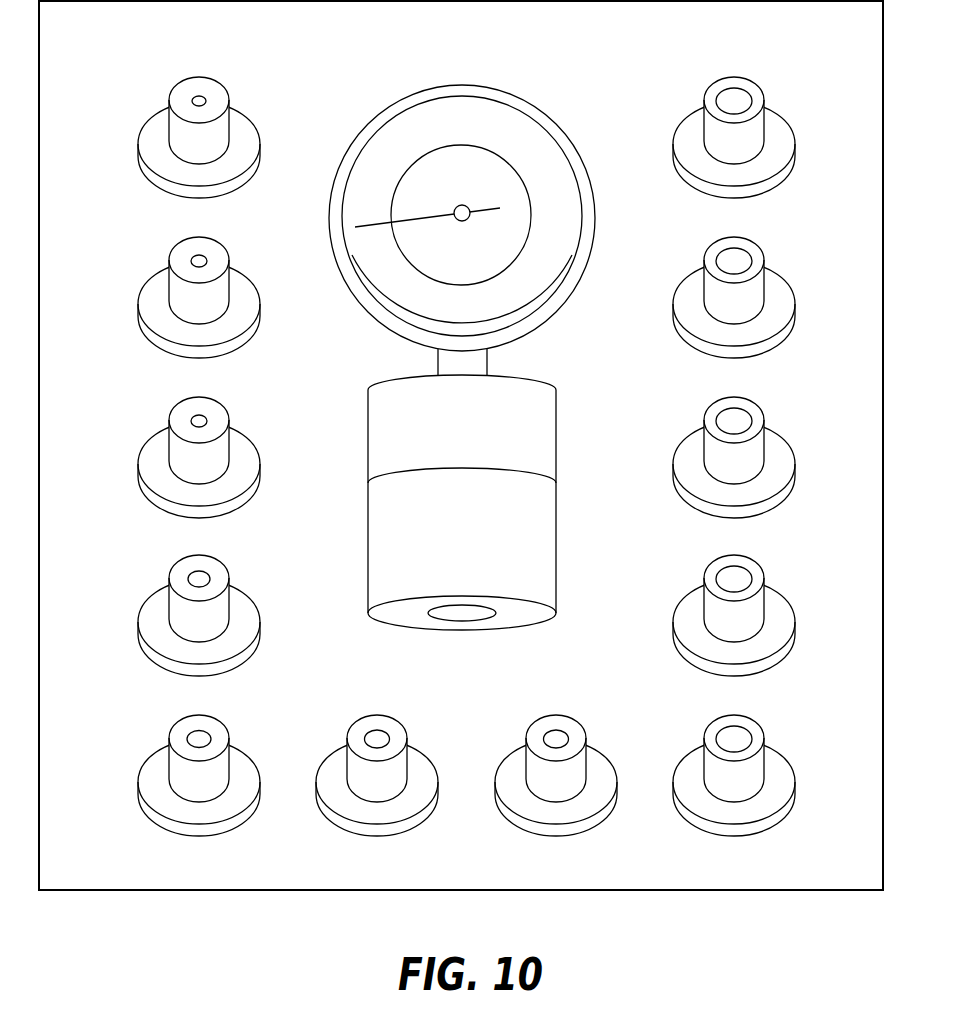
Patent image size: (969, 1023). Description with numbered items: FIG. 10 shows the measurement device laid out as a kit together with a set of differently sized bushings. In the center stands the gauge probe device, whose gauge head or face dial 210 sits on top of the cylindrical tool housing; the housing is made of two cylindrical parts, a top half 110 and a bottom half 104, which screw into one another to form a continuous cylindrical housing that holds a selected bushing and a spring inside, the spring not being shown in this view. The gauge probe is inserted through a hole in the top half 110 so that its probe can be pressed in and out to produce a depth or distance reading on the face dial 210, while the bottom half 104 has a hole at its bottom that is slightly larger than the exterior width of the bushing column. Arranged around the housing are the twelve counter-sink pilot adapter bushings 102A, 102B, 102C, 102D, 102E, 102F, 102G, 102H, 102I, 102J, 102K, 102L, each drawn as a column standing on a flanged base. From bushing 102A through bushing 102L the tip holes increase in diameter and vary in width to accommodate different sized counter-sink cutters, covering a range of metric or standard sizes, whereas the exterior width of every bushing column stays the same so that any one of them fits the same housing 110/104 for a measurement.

The bushing 102A is at (176, 85).
The bushing 102B is at (176, 245).
The bushing 102C is at (176, 405).
The bushing 102D is at (176, 563).
The bushing 102E is at (176, 723).
The bushing 102F is at (354, 723).
The bushing 102G is at (533, 723).
The bushing 102H is at (711, 723).
The bushing 102I is at (711, 563).
The bushing 102J is at (711, 405).
The bushing 102K is at (711, 245).
The bushing 102L is at (711, 85).
The gauge head/face 210 is at (440, 118).
The top half of the housing 110 is at (418, 502).
The bottom half of the housing 104 is at (368, 543).